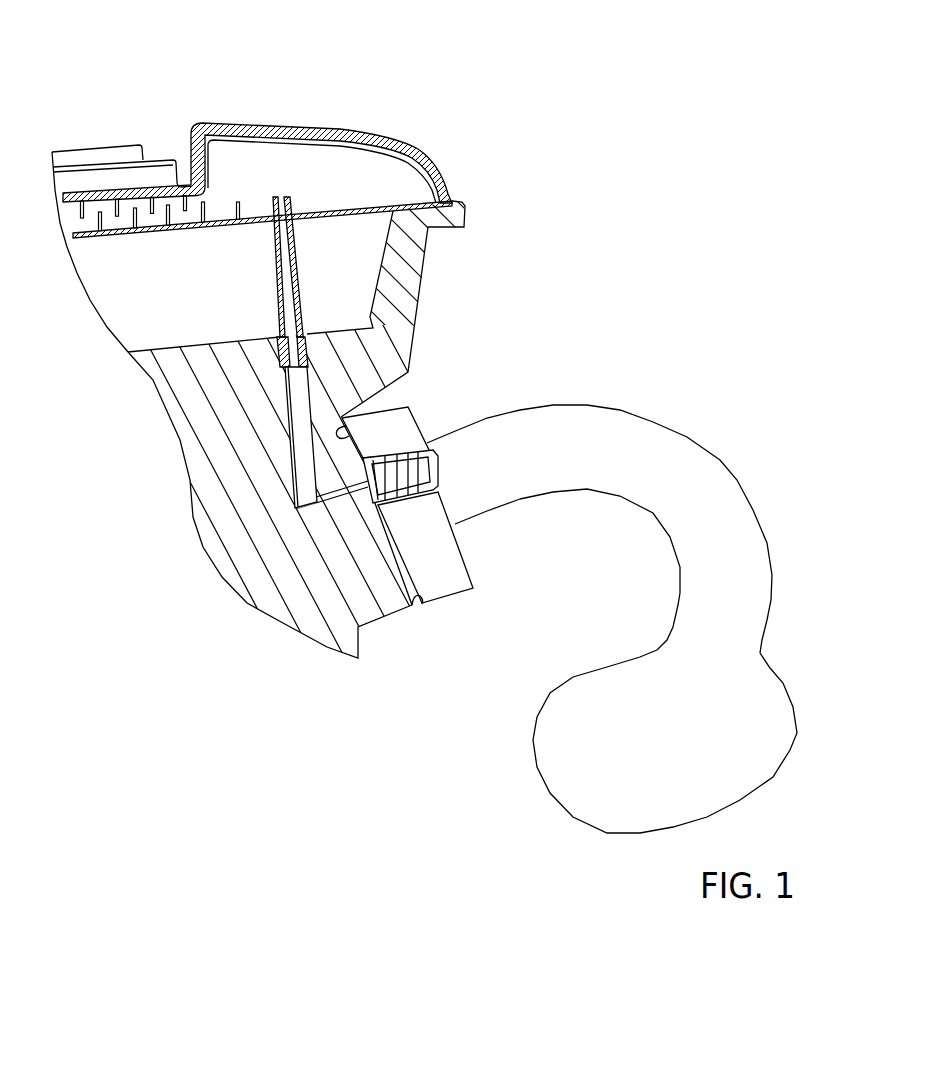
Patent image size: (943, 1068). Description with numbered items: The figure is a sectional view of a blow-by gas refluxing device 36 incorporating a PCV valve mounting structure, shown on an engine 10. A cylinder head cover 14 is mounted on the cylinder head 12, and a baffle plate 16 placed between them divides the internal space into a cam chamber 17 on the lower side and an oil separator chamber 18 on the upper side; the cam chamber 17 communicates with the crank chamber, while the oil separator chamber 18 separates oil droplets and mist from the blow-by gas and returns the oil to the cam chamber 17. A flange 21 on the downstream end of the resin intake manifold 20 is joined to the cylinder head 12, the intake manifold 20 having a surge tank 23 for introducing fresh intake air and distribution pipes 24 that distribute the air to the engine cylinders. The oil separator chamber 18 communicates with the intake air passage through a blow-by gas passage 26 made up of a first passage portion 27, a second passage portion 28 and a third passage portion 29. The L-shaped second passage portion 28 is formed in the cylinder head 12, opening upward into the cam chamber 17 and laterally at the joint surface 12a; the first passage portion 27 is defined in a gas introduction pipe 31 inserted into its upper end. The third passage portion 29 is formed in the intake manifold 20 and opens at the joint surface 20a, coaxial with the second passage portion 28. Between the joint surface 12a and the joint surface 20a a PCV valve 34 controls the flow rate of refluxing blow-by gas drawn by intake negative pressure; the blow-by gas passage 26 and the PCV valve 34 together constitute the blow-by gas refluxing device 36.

The engine 10 is at (440, 100).
The cylinder head 12 is at (410, 328).
The joint surface 12a is at (418, 601).
The cylinder head cover 14 is at (368, 132).
The baffle plate 16 is at (380, 203).
The cam chamber 17 is at (119, 296).
The oil separator chamber 18 is at (228, 157).
The intake manifold 20 is at (727, 452).
The joint surface 20a is at (343, 427).
The flange 21 is at (447, 570).
The surge tank 23 is at (570, 763).
The distribution pipes 24 is at (570, 423).
The blow-by gas passage 26 is at (286, 430).
The first passage portion 27 is at (281, 285).
The second passage portion 28 is at (300, 498).
The third passage portion 29 is at (438, 465).
The gas introduction pipe 31 is at (295, 280).
The PCV valve 34 is at (388, 460).
The blow-by gas refluxing device 36 is at (298, 524).